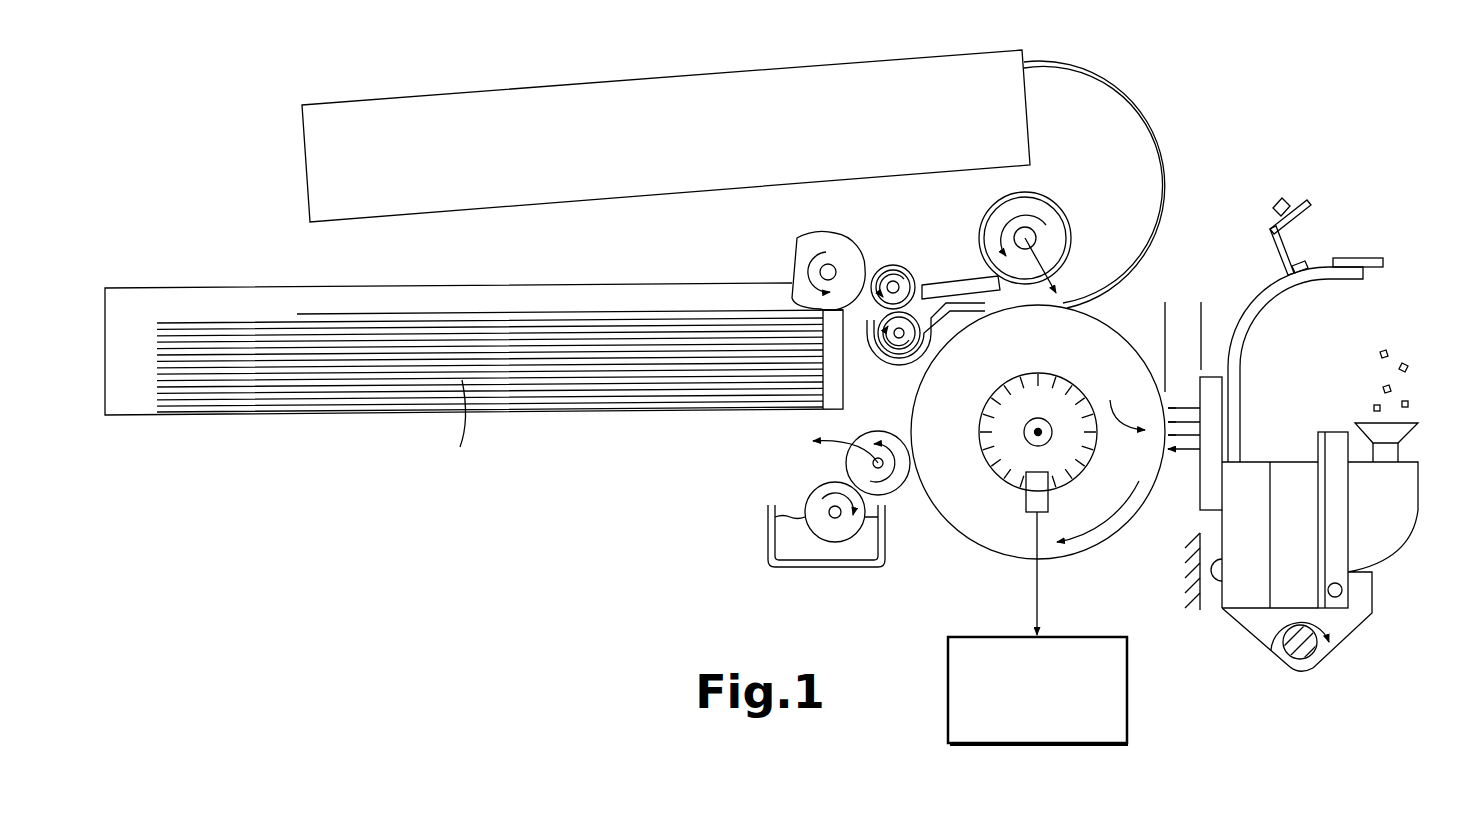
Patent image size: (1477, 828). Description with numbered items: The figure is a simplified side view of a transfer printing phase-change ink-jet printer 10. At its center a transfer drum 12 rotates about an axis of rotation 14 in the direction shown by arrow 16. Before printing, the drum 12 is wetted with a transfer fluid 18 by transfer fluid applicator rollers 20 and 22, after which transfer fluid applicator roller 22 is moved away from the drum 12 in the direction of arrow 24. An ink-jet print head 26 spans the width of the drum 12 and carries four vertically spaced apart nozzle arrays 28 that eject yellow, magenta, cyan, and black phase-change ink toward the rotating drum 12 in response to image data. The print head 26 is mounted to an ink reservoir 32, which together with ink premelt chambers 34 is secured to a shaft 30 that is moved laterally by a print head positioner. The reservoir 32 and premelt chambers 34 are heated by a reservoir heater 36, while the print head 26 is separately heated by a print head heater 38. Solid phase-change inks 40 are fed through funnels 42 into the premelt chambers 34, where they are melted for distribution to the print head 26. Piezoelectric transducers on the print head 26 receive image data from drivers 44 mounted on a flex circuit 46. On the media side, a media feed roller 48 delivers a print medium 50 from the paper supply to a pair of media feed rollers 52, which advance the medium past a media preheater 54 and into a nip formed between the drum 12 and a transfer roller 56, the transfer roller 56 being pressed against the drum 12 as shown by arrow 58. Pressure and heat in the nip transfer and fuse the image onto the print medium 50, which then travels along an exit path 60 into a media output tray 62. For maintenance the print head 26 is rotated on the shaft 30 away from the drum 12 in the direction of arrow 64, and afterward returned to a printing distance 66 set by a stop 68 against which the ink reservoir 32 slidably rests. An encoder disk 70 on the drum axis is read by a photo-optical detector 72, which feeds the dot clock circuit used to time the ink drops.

The printer 10 is at (615, 549).
The transfer drum 12 is at (1118, 350).
The axis of rotation 14 is at (1037, 432).
The arrow 16 is at (1095, 525).
The transfer fluid 18 is at (805, 550).
The transfer fluid applicator roller 20 is at (833, 543).
The transfer fluid applicator roller 22 is at (900, 478).
The arrow 24 is at (838, 445).
The ink-jet print head 26 is at (1195, 485).
The nozzle arrays 28 is at (1147, 411).
The shaft 30 is at (1300, 660).
The ink reservoir 32 is at (1247, 488).
The ink premelt chambers 34 is at (1400, 518).
The reservoir heater 36 is at (1338, 598).
The print head heater 38 is at (1222, 398).
The solid phase-change inks 40 is at (1390, 355).
The funnels 42 is at (1420, 438).
The drivers 44 is at (1280, 202).
The flex circuit 46 is at (1250, 328).
The media feed roller 48 is at (832, 232).
The print medium 50 is at (603, 310).
The media feed rollers 52 is at (895, 264).
The media preheater 54 is at (955, 278).
The transfer roller 56 is at (1057, 198).
The arrow 58 is at (1040, 253).
The exit path 60 is at (1122, 95).
The media output tray 62 is at (741, 97).
The arrow 64 is at (1271, 640).
The printing distance 66 is at (1183, 317).
The stop 68 is at (1210, 582).
The encoder disk 70 is at (1062, 382).
The photo-optical detector 72 is at (1026, 500).